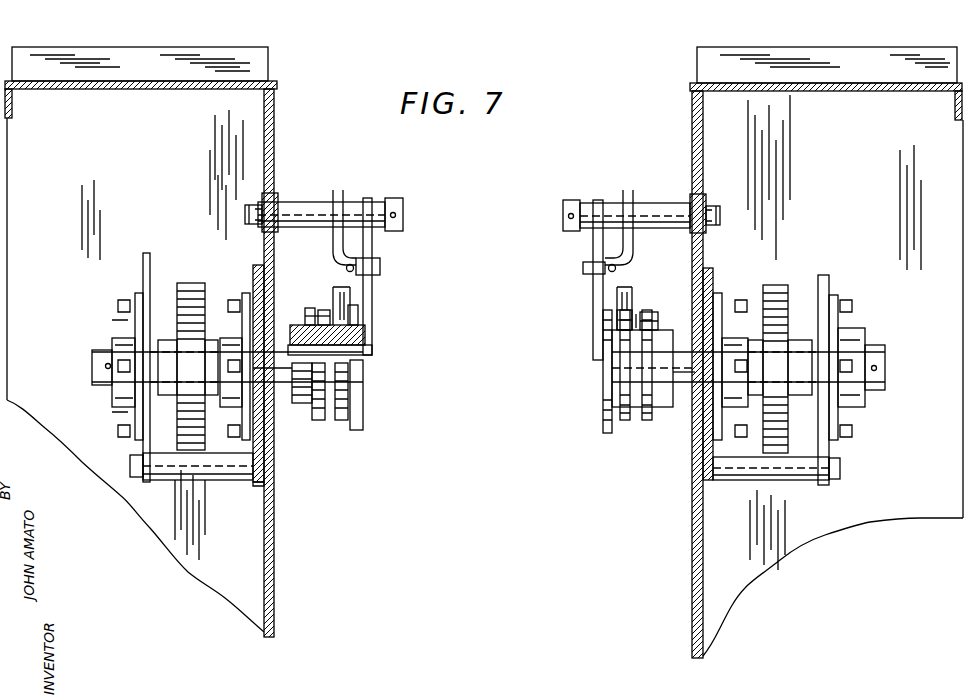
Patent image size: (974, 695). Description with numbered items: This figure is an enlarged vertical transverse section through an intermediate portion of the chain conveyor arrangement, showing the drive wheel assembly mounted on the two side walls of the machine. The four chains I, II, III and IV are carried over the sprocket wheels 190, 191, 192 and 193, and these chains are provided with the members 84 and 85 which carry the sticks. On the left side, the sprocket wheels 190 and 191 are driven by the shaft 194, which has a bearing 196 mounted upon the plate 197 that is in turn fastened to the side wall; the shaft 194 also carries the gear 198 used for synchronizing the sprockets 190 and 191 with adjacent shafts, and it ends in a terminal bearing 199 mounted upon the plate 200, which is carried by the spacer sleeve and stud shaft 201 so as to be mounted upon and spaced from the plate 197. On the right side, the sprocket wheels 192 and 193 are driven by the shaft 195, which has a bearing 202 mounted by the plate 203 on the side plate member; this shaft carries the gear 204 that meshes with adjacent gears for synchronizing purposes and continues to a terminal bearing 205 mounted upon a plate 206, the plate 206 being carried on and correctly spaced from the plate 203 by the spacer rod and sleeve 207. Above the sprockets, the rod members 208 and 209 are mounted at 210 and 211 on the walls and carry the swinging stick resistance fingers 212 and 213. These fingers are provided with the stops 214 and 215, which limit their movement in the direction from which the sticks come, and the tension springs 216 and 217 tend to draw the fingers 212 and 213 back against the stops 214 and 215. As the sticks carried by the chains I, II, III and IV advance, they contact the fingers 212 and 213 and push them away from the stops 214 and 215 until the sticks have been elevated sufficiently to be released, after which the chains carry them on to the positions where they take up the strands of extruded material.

The stick-carrying member 84 is at (352, 290).
The stick-carrying member 85 is at (628, 287).
The sprocket wheel 190 is at (318, 428).
The sprocket wheel 191 is at (342, 428).
The sprocket wheel 192 is at (608, 430).
The sprocket wheel 193 is at (647, 426).
The shaft 194 is at (292, 398).
The shaft 195 is at (690, 390).
The bearing 196 is at (224, 312).
The plate 197 is at (256, 262).
The gear 198 is at (190, 283).
The terminal bearing 199 is at (112, 346).
The plate 200 is at (146, 253).
The spacer sleeve and stud shaft 201 is at (170, 468).
The bearing 202 is at (740, 312).
The plate 203 is at (710, 268).
The gear 204 is at (786, 285).
The terminal bearing 205 is at (848, 330).
The plate 206 is at (830, 450).
The spacer rod and sleeve 207 is at (746, 470).
The rod member 208 is at (306, 202).
The rod member 209 is at (658, 203).
The rod mounting 210 is at (266, 193).
The rod mounting 211 is at (704, 194).
The stick resistance finger 212 is at (378, 244).
The stick resistance finger 213 is at (593, 330).
The stop 214 is at (378, 258).
The stop 215 is at (583, 267).
The tension spring 216 is at (340, 262).
The tension spring 217 is at (606, 256).
The chain I is at (314, 310).
The chain II is at (356, 312).
The chain III is at (634, 312).
The chain IV is at (652, 314).